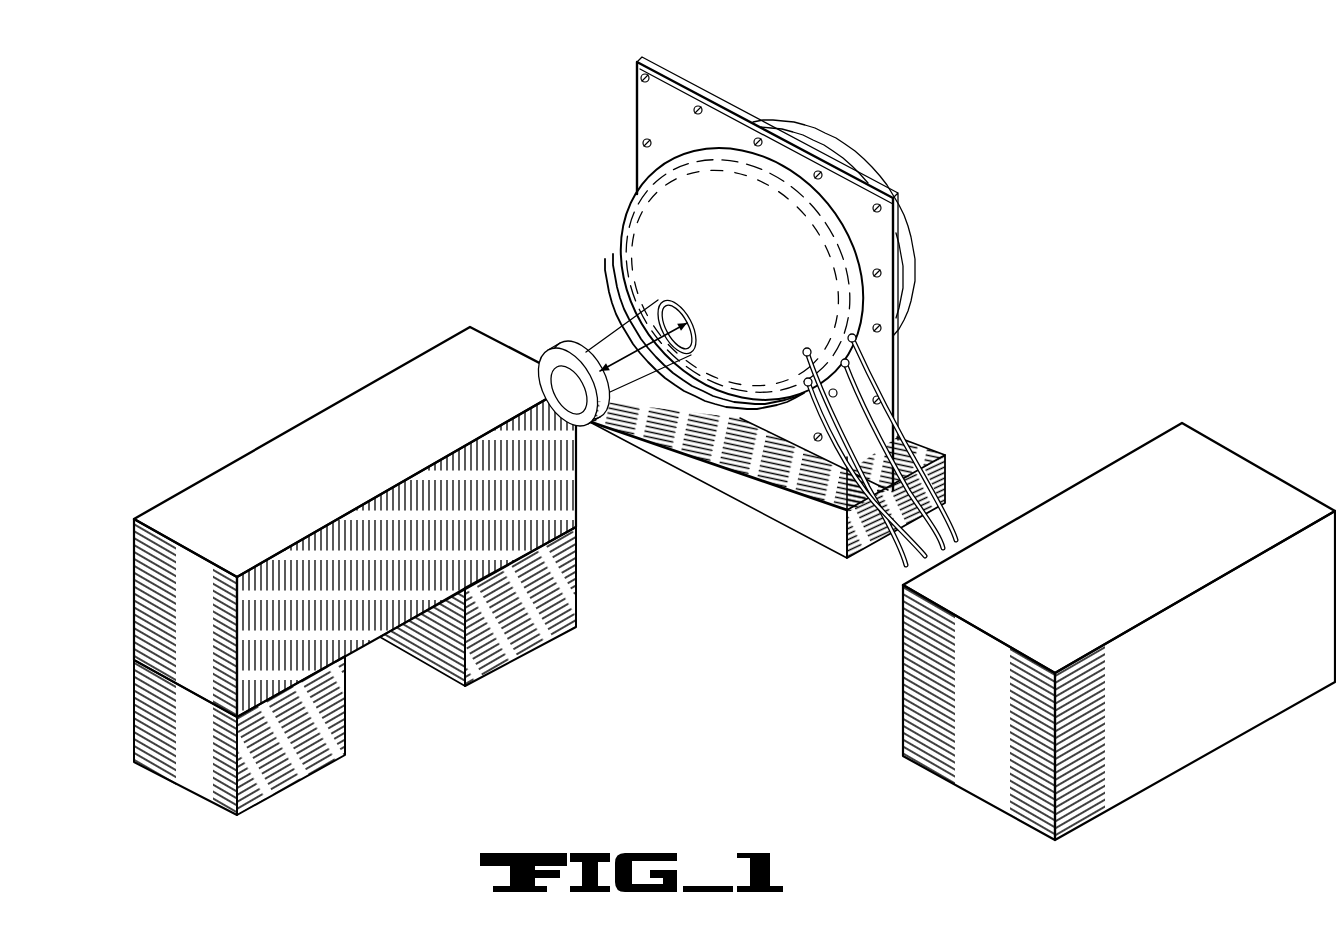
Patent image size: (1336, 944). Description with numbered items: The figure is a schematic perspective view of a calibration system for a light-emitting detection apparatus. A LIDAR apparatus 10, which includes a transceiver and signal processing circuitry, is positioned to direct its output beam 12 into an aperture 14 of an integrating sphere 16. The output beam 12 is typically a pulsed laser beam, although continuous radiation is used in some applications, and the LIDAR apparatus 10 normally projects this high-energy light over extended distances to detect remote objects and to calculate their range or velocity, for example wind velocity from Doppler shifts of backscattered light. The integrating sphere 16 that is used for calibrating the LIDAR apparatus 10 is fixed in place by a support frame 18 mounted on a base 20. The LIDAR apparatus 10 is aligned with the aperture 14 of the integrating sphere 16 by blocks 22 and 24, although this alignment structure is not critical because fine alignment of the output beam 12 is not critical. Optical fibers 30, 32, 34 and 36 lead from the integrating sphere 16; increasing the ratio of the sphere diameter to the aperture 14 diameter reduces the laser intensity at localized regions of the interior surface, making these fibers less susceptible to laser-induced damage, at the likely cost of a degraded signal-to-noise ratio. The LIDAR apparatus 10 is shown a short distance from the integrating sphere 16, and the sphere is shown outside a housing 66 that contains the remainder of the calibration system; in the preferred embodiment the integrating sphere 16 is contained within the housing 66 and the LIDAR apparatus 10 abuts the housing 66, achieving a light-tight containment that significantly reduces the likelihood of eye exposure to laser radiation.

The LIDAR apparatus 10 is at (349, 412).
The output beam 12 is at (583, 352).
The aperture 14 is at (597, 343).
The integrating sphere 16 is at (652, 246).
The support frame 18 is at (677, 106).
The base 20 is at (788, 527).
The block 22 is at (280, 764).
The block 24 is at (493, 652).
The optical fiber 30 is at (887, 557).
The optical fiber 32 is at (905, 573).
The optical fiber 34 is at (940, 545).
The optical fiber 36 is at (940, 446).
The housing 66 is at (1234, 479).